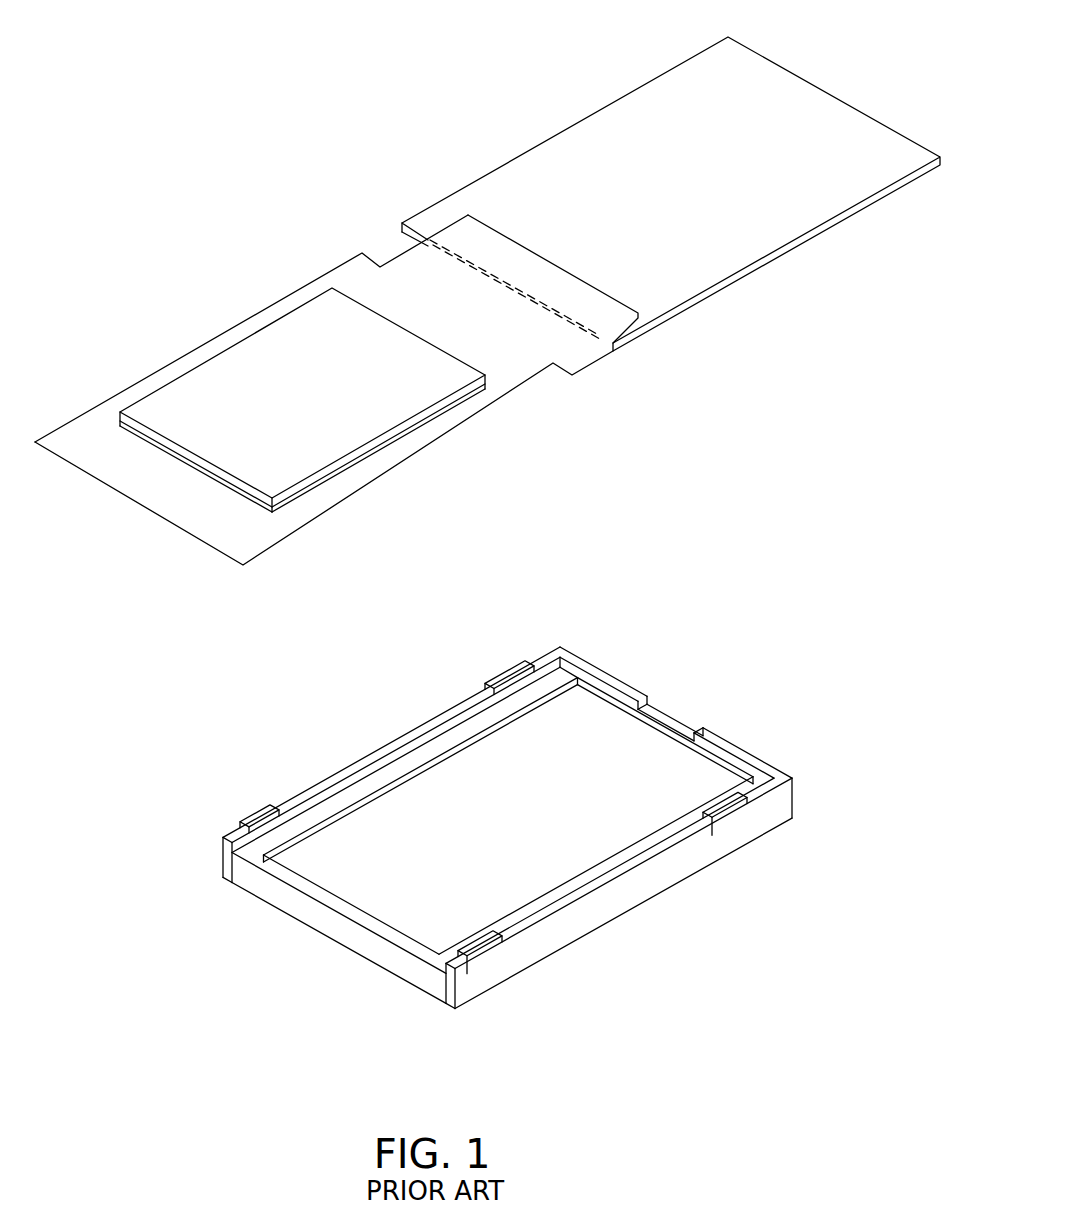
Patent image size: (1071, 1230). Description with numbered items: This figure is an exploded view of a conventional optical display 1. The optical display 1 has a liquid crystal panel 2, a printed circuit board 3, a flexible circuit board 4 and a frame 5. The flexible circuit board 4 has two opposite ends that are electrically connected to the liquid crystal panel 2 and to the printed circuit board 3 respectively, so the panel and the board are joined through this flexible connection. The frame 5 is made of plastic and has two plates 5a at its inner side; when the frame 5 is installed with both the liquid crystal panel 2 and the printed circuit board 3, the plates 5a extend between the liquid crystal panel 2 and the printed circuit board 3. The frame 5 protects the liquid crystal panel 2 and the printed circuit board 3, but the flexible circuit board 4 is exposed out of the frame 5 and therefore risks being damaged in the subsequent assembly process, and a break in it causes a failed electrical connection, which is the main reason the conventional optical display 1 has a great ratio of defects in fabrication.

The optical display 1 is at (334, 182).
The liquid crystal panel 2 is at (230, 373).
The printed circuit board 3 is at (637, 130).
The flexible circuit board 4 is at (557, 340).
The frame 5 is at (628, 893).
The plates 5a is at (423, 755).